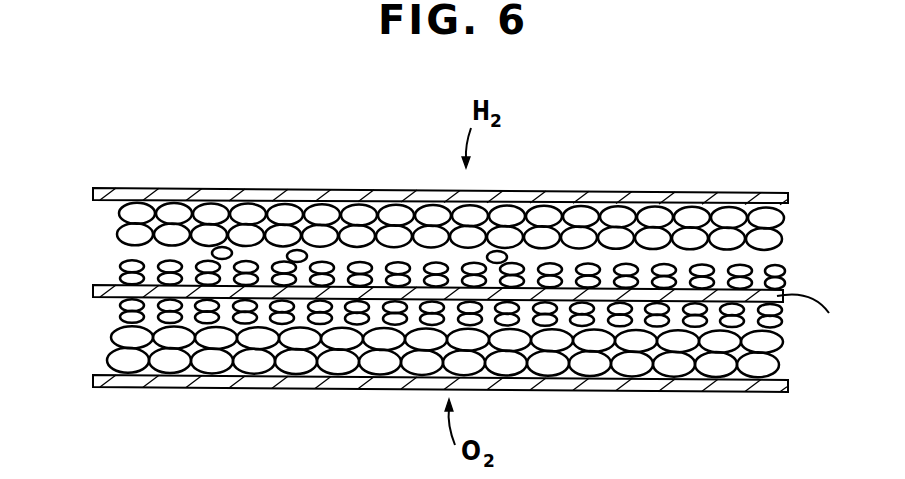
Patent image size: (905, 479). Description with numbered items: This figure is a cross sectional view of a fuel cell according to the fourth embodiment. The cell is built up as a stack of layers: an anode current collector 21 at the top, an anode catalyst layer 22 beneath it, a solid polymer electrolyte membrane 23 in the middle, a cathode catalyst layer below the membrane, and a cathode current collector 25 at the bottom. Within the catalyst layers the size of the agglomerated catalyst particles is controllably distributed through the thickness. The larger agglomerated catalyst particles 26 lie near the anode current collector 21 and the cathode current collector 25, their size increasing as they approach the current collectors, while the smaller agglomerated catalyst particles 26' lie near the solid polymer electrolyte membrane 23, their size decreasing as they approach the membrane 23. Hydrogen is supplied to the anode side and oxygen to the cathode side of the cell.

The anode current collector 21 is at (666, 194).
The anode catalyst layer 22 is at (797, 204).
The solid polymer electrolyte membrane 23 is at (797, 293).
The cathode current collector 25 is at (676, 384).
The agglomerated catalyst particles 26 is at (264, 282).
The agglomerated catalyst particles 26' is at (566, 290).